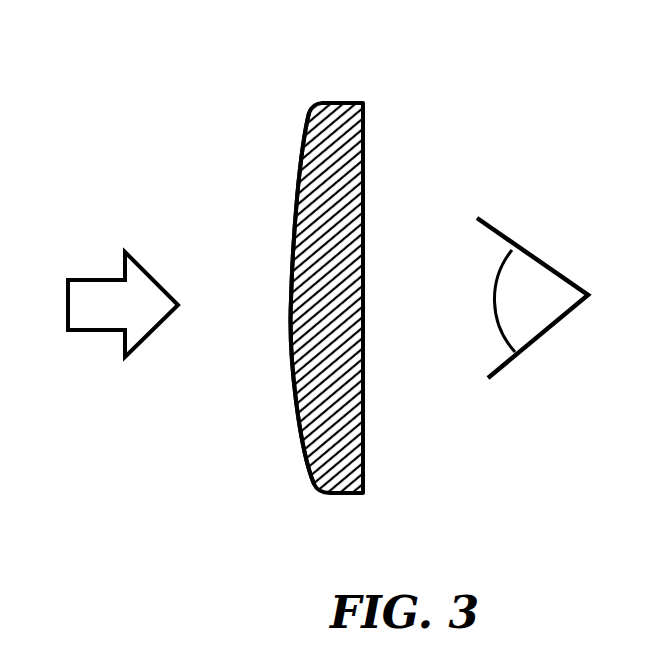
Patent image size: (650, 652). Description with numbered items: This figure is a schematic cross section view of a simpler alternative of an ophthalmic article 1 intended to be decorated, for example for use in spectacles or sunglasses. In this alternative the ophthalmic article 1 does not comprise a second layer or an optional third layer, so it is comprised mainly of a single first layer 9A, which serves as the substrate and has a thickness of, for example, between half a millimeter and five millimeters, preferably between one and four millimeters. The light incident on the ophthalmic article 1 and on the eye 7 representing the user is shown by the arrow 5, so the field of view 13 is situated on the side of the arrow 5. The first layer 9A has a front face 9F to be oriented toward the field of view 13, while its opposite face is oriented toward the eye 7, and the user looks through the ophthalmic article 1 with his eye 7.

The ophthalmic article 1 is at (470, 112).
The arrow 5 is at (90, 280).
The eye 7 is at (540, 337).
The first layer 9A is at (328, 103).
The front face 9F is at (292, 360).
The field of view 13 is at (158, 186).